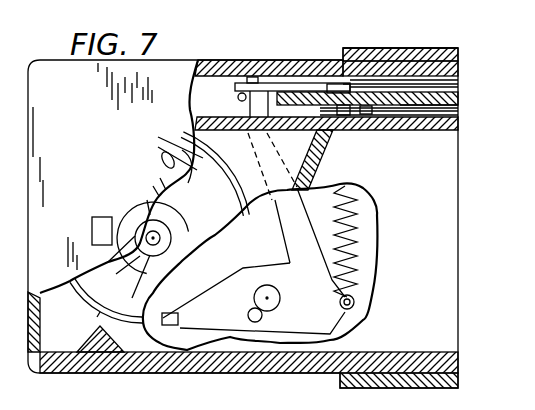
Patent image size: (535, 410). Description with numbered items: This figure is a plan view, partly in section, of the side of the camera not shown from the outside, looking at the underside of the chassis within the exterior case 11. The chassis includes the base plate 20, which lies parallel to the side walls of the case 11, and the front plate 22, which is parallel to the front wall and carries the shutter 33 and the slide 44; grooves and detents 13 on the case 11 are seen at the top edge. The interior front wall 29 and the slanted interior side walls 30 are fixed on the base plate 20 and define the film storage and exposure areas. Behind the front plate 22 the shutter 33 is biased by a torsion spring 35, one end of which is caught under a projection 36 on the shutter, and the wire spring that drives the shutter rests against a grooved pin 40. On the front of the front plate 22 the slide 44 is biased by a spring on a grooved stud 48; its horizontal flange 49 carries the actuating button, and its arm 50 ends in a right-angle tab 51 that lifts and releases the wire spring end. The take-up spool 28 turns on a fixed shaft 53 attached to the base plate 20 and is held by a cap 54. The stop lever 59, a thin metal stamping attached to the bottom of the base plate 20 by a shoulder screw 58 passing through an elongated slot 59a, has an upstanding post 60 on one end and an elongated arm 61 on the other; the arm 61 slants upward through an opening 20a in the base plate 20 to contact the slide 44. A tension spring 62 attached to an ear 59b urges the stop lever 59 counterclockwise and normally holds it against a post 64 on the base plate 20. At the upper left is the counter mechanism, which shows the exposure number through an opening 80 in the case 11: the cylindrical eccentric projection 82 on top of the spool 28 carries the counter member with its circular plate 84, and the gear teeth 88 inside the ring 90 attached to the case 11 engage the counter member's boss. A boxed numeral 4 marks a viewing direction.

The section indicator 4 is at (102, 231).
The exterior case 11 is at (97, 130).
The grooves and detents 13 is at (366, 58).
The base plate 20 is at (437, 273).
The opening 20a is at (288, 127).
The front plate 22 is at (427, 62).
The take-up spool 28 is at (97, 317).
The interior front wall 29 is at (210, 131).
The slanted interior side walls 30 is at (315, 167).
The shutter 33 is at (438, 112).
The torsion spring 35 is at (418, 112).
The projection 36 is at (372, 128).
The grooved pin 40 is at (358, 128).
The slide 44 is at (277, 88).
The grooved stud 48 is at (443, 62).
The horizontal flange 49 is at (345, 90).
The arm 50 is at (330, 88).
The right-angle tab 51 is at (330, 110).
The fixed shaft 53 is at (163, 240).
The cap 54 is at (110, 289).
The shoulder screw 58 is at (270, 302).
The stop lever 59 is at (317, 293).
The elongated slot 59a is at (249, 313).
The ear 59b is at (355, 303).
The upstanding post 60 is at (172, 313).
The elongated arm 61 is at (283, 225).
The tension spring 62 is at (358, 238).
The post 64 is at (236, 99).
The opening 80 is at (97, 215).
The cylindrical eccentric projection 82 is at (187, 221).
The circular plate 84 is at (147, 200).
The gear teeth 88 is at (167, 158).
The ring 90 is at (173, 135).